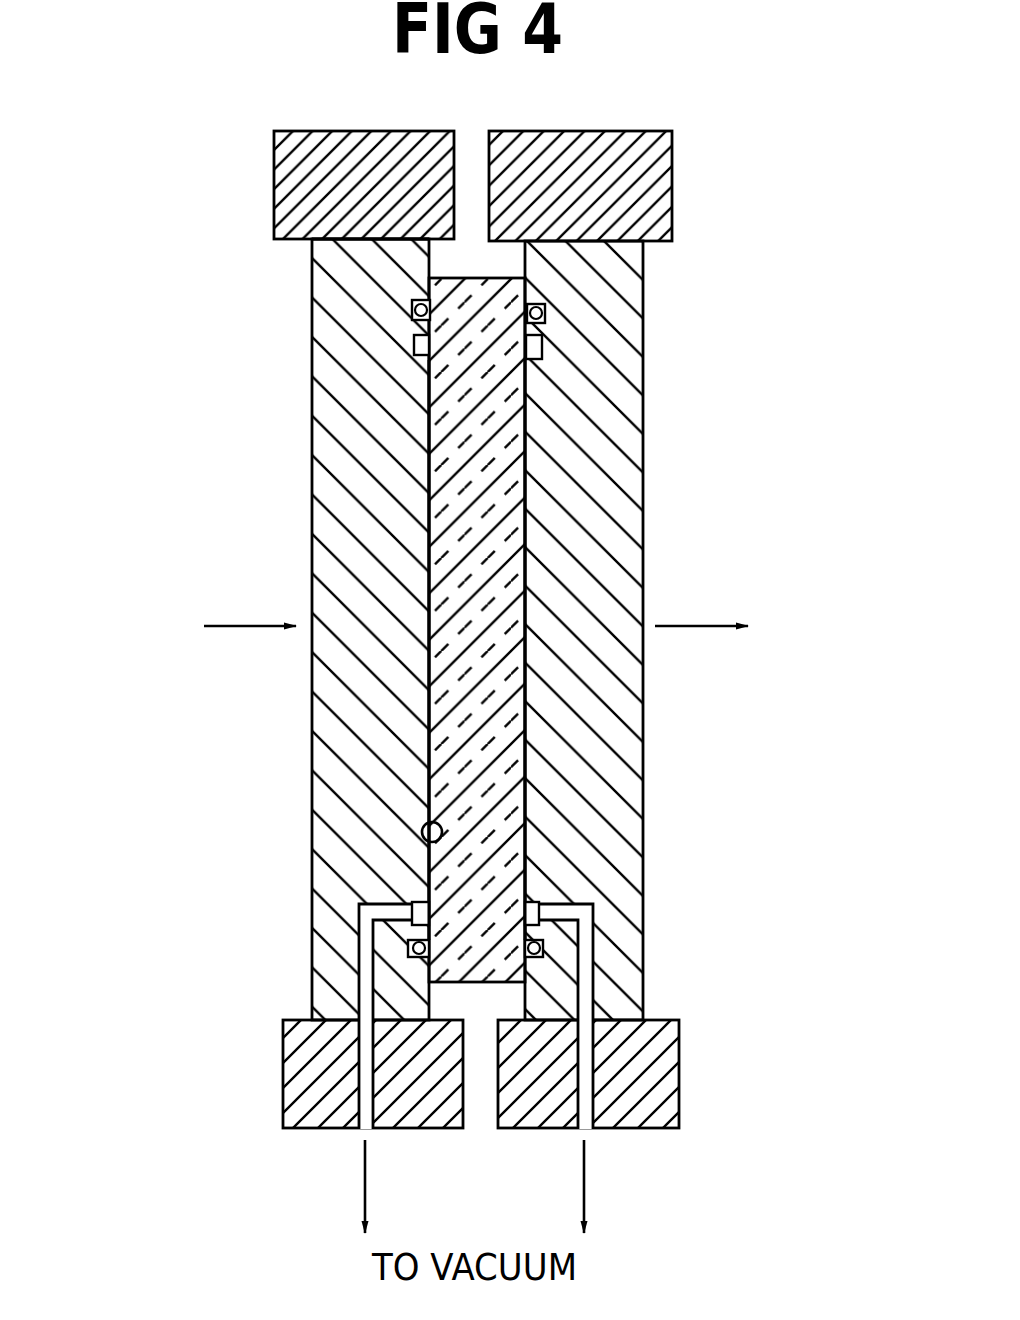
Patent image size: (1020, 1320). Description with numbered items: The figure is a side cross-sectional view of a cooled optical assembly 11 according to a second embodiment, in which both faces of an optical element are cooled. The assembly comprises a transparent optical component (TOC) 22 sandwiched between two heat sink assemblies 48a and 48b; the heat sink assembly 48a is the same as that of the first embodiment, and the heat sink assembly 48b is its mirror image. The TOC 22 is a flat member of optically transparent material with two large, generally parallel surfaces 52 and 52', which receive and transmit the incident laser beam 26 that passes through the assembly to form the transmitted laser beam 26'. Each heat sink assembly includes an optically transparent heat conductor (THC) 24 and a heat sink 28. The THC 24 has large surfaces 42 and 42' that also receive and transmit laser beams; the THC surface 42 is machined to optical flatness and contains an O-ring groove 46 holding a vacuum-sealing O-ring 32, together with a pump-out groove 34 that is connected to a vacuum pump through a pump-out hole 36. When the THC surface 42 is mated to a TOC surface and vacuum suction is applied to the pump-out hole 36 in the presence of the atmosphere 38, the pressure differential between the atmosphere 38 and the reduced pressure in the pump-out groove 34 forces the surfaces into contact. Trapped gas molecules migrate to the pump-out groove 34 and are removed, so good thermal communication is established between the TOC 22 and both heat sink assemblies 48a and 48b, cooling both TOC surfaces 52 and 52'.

The cooled optical assembly 11 is at (272, 87).
The transparent optical component 22 is at (452, 493).
The optically transparent heat conductor 24 is at (643, 746).
The incident laser beam 26 is at (212, 582).
The transmitted laser beam 26' is at (733, 597).
The heat sink 28 is at (679, 1076).
The vacuum-sealing O-ring 32 is at (545, 311).
The pump-out groove 34 is at (412, 345).
The pump-out hole 36 is at (593, 930).
The atmosphere 38 is at (262, 297).
The THC surface 42 is at (313, 880).
The THC surface 42' is at (658, 957).
The O-ring groove 46 is at (545, 306).
The heat sink assembly 48a is at (283, 1113).
The heat sink assembly 48b is at (650, 1128).
The TOC surface 52 is at (307, 650).
The TOC surface 52' is at (646, 650).